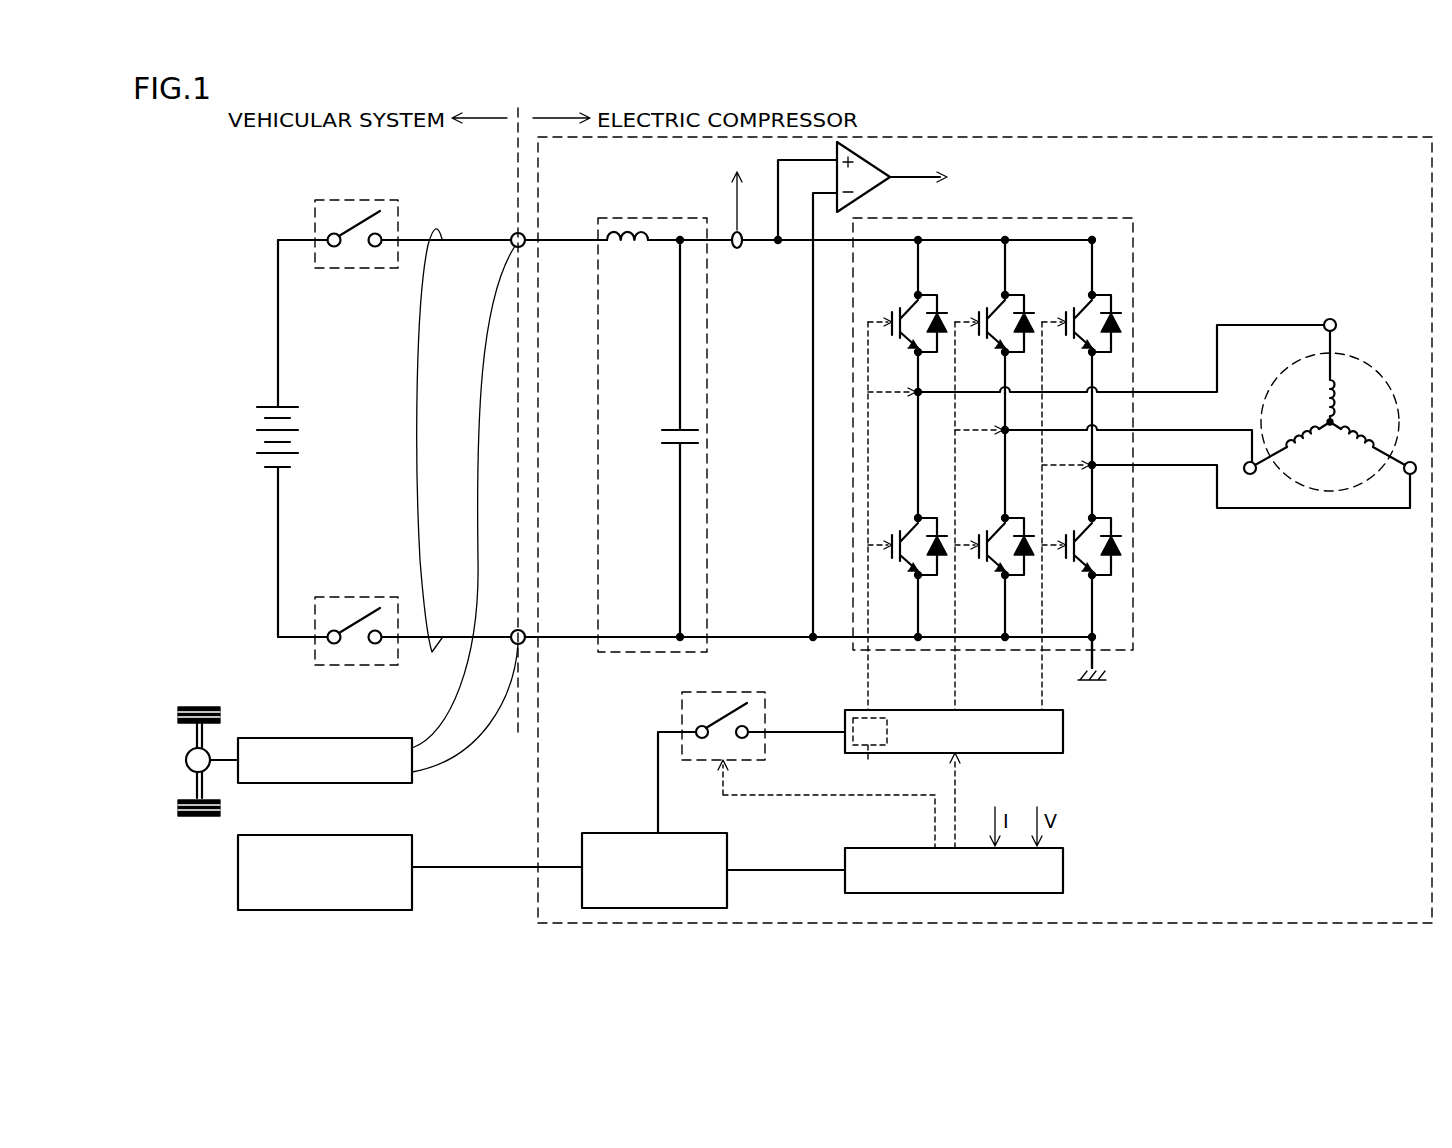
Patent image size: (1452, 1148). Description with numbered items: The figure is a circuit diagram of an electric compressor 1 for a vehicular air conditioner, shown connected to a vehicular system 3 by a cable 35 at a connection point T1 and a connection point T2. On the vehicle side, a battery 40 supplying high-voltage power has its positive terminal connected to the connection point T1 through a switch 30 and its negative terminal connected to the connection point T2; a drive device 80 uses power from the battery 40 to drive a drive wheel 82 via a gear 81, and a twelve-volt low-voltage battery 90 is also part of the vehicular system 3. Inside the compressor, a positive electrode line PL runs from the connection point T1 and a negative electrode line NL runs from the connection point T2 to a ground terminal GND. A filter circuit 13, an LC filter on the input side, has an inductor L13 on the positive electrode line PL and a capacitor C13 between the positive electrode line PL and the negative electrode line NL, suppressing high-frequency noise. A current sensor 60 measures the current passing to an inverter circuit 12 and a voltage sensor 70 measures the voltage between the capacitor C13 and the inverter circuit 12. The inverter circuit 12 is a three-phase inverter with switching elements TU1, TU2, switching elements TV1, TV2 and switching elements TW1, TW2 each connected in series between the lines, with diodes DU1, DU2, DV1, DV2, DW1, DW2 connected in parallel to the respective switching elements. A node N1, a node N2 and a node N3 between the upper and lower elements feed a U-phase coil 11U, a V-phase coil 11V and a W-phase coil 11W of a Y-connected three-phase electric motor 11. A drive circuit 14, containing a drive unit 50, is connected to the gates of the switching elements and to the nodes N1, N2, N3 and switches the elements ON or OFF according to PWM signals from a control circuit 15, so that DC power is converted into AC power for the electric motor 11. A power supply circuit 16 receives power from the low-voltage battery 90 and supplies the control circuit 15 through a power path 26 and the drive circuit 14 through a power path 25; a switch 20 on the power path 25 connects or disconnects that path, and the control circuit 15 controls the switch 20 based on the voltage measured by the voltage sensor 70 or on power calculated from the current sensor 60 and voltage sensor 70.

The electric compressor 1 is at (1363, 137).
The vehicular system 3 is at (233, 191).
The switch 30 is at (357, 200).
The battery 40 is at (268, 405).
The connection point T1 is at (514, 234).
The connection point T2 is at (514, 631).
The positive electrode line PL is at (565, 238).
The negative electrode line NL is at (565, 640).
The cable 35 is at (432, 652).
The filter circuit 13 is at (673, 217).
The inductor L13 is at (630, 247).
The capacitor C13 is at (672, 428).
The current sensor 60 is at (740, 243).
The voltage sensor 70 is at (867, 188).
The inverter circuit 12 is at (1093, 217).
The switching element TU1 is at (903, 308).
The switching element TV1 is at (990, 308).
The switching element TW1 is at (1077, 308).
The switching element TU2 is at (903, 530).
The switching element TV2 is at (990, 530).
The switching element TW2 is at (1077, 530).
The diode DU1 is at (940, 335).
The diode DV1 is at (1027, 335).
The diode DW1 is at (1114, 335).
The diode DU2 is at (940, 558).
The diode DV2 is at (1027, 558).
The diode DW2 is at (1114, 558).
The node N1 is at (916, 396).
The node N2 is at (1002, 428).
The node N3 is at (1087, 460).
The ground terminal GND is at (1118, 661).
The electric motor 11 is at (1370, 363).
The U-phase coil 11U is at (1335, 395).
The V-phase coil 11V is at (1305, 428).
The W-phase coil 11W is at (1350, 443).
The drive device 80 is at (362, 738).
The gear 81 is at (185, 758).
The drive wheel 82 is at (198, 705).
The low-voltage battery 90 is at (362, 835).
The power supply circuit 16 is at (685, 833).
The switch 20 is at (722, 692).
The power path 25 is at (657, 757).
The power path 26 is at (785, 868).
The drive circuit 14 is at (1063, 735).
The drive unit 50 is at (870, 753).
The control circuit 15 is at (1063, 870).